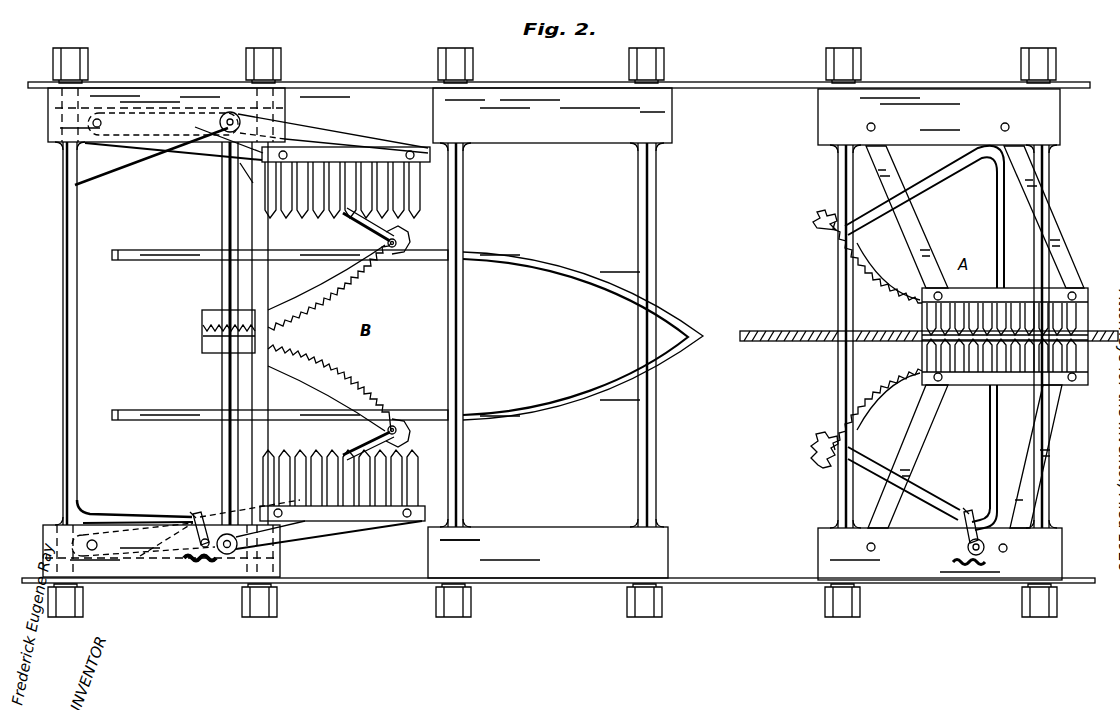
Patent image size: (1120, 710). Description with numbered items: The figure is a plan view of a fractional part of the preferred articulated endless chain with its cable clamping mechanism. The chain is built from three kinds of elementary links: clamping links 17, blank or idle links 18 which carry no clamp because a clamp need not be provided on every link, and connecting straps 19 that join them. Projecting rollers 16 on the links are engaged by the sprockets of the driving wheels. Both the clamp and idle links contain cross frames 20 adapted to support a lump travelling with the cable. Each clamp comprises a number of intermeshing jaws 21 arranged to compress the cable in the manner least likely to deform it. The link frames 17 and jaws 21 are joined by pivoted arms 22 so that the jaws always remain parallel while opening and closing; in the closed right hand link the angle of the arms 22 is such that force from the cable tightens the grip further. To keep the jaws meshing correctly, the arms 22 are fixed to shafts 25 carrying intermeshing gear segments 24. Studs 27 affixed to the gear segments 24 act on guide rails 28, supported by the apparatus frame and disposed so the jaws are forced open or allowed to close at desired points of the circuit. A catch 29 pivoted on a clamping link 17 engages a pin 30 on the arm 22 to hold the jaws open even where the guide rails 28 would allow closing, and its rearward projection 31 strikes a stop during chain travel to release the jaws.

The projecting roller 16 is at (73, 63).
The clamping link 17 is at (162, 102).
The idle link 18 is at (475, 110).
The connecting strap 19 is at (292, 85).
The cross frame 20 is at (78, 298).
The intermeshing jaw 21 is at (420, 206).
The pivoted arm 22 is at (328, 133).
The gear segment 24 is at (335, 292).
The shaft 25 is at (229, 112).
The stud 27 is at (404, 239).
The guide rail 28 is at (545, 264).
The catch 29 is at (193, 528).
The pin 30 is at (200, 514).
The rearward projection 31 is at (212, 566).